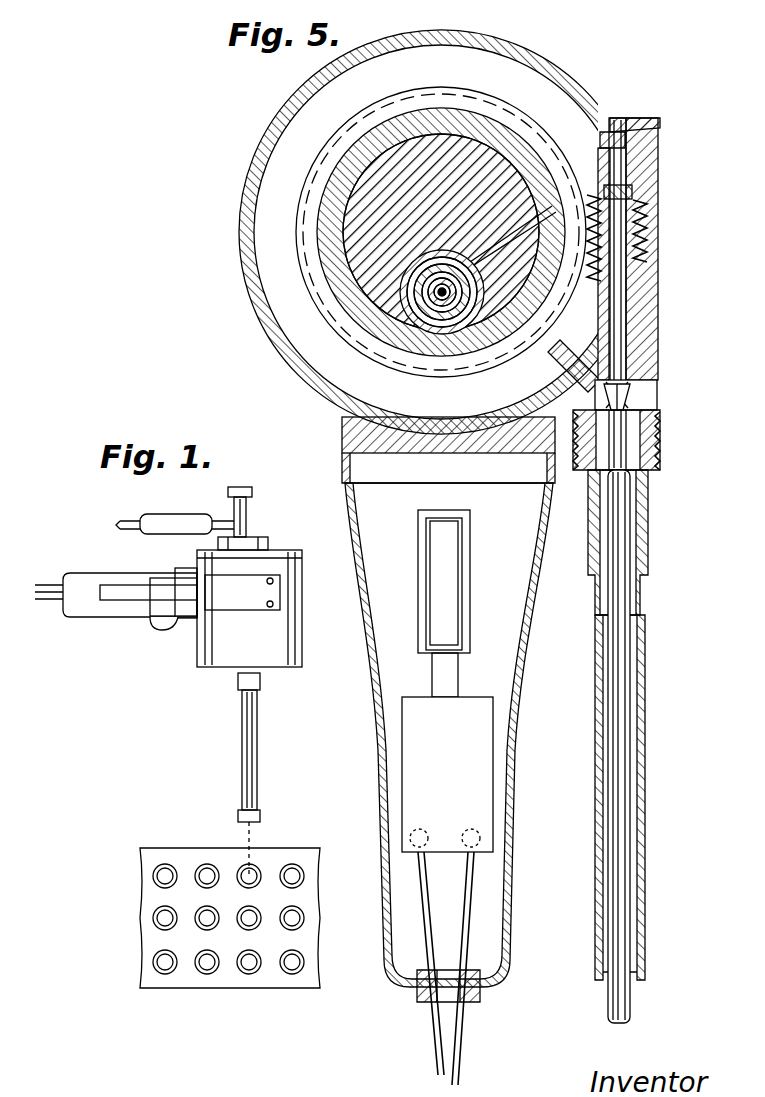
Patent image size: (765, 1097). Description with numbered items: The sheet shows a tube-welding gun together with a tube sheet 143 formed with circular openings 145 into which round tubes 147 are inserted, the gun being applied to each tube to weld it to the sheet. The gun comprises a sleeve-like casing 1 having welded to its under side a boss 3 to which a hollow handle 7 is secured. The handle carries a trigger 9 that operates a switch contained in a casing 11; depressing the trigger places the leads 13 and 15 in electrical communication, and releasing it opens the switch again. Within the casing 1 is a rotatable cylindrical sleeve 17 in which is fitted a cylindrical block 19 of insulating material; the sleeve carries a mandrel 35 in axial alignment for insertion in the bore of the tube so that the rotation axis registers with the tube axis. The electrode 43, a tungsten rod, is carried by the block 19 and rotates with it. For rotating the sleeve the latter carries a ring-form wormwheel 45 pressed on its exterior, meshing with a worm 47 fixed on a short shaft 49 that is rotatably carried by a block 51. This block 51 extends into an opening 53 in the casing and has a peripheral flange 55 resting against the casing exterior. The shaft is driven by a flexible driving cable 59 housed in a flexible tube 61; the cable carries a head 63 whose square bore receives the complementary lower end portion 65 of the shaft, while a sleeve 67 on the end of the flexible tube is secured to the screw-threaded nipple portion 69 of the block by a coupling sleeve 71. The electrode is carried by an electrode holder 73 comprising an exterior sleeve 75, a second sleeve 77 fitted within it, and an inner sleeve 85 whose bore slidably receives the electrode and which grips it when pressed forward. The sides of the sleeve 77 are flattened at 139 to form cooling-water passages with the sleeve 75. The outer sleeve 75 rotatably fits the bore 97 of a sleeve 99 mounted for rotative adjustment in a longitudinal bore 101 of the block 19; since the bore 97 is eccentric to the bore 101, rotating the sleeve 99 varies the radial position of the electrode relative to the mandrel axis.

In FIG. 5, the casing 1 is at (520, 58).
In FIG. 1, the casing 1 is at (303, 641).
In FIG. 5, the boss 3 is at (342, 441).
In FIG. 5, the handle 7 is at (380, 790).
In FIG. 1, the handle 7 is at (98, 612).
In FIG. 1, the trigger 9 is at (164, 626).
In FIG. 5, the switch casing 11 is at (432, 740).
In FIG. 5, the lead 13 is at (437, 1046).
In FIG. 5, the lead 15 is at (460, 1044).
In FIG. 5, the cylindrical sleeve 17 is at (326, 236).
In FIG. 5, the cylindrical block 19 is at (352, 212).
In FIG. 1, the mandrel 35 is at (234, 750).
In FIG. 5, the electrode 43 is at (440, 302).
In FIG. 5, the wormwheel 45 is at (548, 126).
In FIG. 5, the worm 47 is at (646, 230).
In FIG. 5, the shaft 49 is at (622, 170).
In FIG. 5, the block 51 is at (656, 326).
In FIG. 5, the opening 53 is at (610, 134).
In FIG. 5, the peripheral flange 55 is at (634, 124).
In FIG. 5, the flexible driving cable 59 is at (622, 698).
In FIG. 5, the flexible tube 61 is at (646, 766).
In FIG. 5, the head 63 is at (628, 392).
In FIG. 5, the lower end portion 65 is at (617, 416).
In FIG. 5, the sleeve 67 is at (648, 512).
In FIG. 5, the nipple portion 69 is at (656, 450).
In FIG. 5, the coupling sleeve 71 is at (662, 440).
In FIG. 1, the electrode holder 73 is at (252, 512).
In FIG. 5, the exterior sleeve 75 is at (434, 303).
In FIG. 5, the second sleeve 77 is at (446, 302).
In FIG. 5, the sleeve 85 is at (462, 318).
In FIG. 5, the bore 97 is at (428, 304).
In FIG. 5, the sleeve 99 is at (418, 284).
In FIG. 5, the bore 101 is at (414, 270).
In FIG. 5, the flattened sides 139 is at (560, 350).
In FIG. 1, the tube sheet 143 is at (180, 856).
In FIG. 1, the openings 145 is at (158, 918).
In FIG. 1, the tubes 147 is at (160, 962).